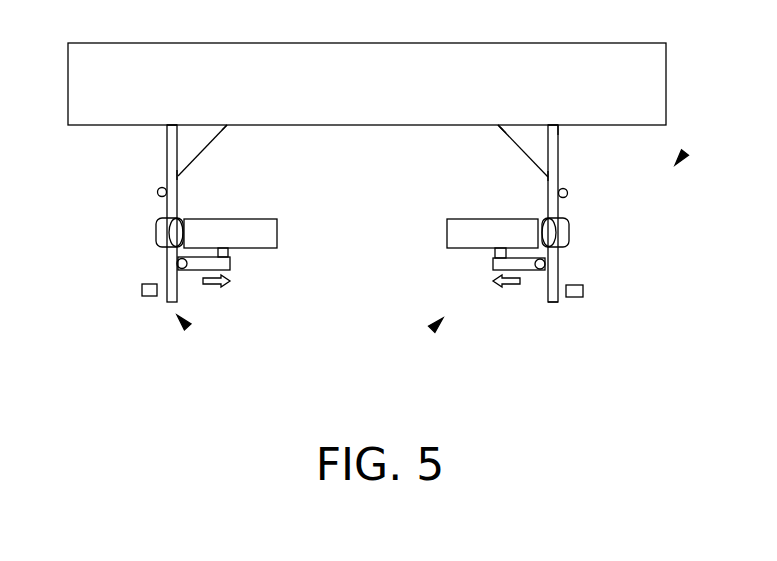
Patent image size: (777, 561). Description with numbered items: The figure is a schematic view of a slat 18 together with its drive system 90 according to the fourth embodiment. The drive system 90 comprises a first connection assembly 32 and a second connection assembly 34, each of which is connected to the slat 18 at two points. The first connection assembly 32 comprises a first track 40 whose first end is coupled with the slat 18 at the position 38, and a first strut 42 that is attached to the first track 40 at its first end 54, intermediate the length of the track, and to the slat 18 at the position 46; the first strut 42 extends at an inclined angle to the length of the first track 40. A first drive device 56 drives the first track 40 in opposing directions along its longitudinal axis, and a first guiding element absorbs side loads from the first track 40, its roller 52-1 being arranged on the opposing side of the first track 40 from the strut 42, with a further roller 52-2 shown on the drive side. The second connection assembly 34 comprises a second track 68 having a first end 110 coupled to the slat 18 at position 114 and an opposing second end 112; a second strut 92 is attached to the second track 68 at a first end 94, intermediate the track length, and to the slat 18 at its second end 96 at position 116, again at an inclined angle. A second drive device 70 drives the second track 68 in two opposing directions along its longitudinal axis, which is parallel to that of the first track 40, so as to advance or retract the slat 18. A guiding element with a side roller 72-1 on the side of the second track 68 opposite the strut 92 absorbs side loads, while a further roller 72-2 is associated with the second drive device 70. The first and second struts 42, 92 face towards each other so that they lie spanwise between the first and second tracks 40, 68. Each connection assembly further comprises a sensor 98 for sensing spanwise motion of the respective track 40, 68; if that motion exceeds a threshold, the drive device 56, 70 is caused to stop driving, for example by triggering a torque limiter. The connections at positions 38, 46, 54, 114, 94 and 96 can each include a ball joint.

The slat 18 is at (382, 50).
The first connection assembly 32 is at (186, 325).
The second connection assembly 34 is at (435, 326).
The position 38 is at (172, 125).
The first track 40 is at (167, 153).
The first strut 42 is at (203, 152).
The position 46 is at (228, 125).
The first end 54 is at (178, 176).
The roller 52-1 is at (157, 192).
The second sensor 52-2 is at (184, 269).
The first drive device 56 is at (277, 244).
The second track 68 is at (558, 157).
The second drive device 70 is at (453, 249).
The roller 72-1 is at (567, 193).
The fourth sensor 72-2 is at (542, 269).
The drive system 90 is at (683, 155).
The second strut 92 is at (522, 150).
The first end 94 is at (548, 180).
The second end 96 is at (500, 129).
The sensor 98 is at (143, 287).
The first end 110 is at (558, 125).
The second end 112 is at (550, 302).
The position 114 is at (551, 125).
The position 116 is at (498, 125).